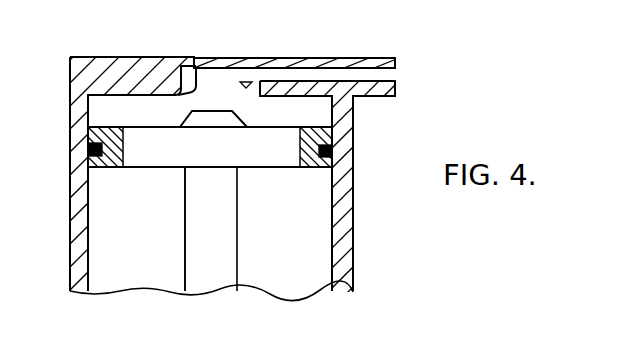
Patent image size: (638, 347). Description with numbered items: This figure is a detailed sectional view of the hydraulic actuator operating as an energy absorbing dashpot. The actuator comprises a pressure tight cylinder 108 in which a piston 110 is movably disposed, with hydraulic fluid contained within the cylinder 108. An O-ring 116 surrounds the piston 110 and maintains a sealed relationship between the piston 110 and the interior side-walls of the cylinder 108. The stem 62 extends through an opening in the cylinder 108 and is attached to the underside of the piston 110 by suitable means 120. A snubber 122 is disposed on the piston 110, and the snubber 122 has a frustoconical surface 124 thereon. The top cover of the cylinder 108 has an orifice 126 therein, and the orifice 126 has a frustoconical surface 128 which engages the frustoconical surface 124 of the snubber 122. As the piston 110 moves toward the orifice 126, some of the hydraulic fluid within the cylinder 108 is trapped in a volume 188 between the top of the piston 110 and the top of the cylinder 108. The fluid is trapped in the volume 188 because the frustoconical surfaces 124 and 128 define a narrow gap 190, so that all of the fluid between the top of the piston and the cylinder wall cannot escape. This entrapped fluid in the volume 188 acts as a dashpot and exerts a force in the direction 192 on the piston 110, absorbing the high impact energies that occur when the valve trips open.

The stem 62 is at (233, 246).
The cylinder 108 is at (343, 245).
The piston 110 is at (150, 167).
The O-ring 116 is at (317, 160).
The suitable means 120 is at (184, 170).
The snubber 122 is at (210, 120).
The frustoconical surface 124 is at (185, 127).
The orifice 126 is at (227, 73).
The frustoconical surface 128 is at (197, 63).
The volume 188 is at (260, 113).
The narrow gap 190 is at (246, 110).
The direction 192 is at (313, 120).